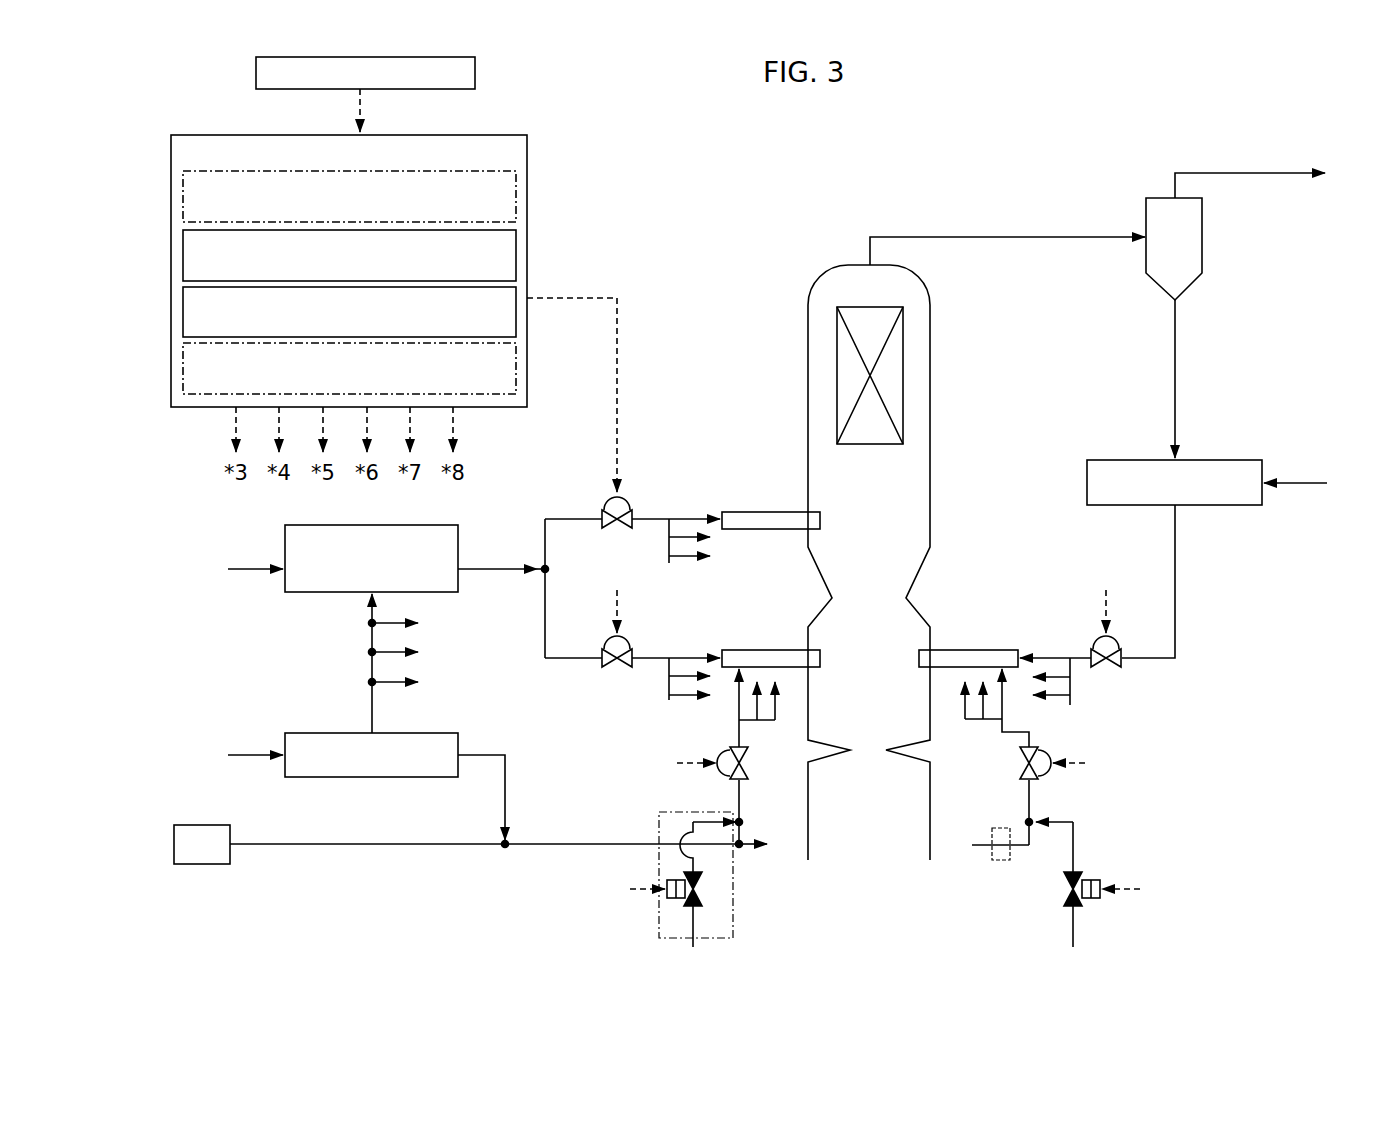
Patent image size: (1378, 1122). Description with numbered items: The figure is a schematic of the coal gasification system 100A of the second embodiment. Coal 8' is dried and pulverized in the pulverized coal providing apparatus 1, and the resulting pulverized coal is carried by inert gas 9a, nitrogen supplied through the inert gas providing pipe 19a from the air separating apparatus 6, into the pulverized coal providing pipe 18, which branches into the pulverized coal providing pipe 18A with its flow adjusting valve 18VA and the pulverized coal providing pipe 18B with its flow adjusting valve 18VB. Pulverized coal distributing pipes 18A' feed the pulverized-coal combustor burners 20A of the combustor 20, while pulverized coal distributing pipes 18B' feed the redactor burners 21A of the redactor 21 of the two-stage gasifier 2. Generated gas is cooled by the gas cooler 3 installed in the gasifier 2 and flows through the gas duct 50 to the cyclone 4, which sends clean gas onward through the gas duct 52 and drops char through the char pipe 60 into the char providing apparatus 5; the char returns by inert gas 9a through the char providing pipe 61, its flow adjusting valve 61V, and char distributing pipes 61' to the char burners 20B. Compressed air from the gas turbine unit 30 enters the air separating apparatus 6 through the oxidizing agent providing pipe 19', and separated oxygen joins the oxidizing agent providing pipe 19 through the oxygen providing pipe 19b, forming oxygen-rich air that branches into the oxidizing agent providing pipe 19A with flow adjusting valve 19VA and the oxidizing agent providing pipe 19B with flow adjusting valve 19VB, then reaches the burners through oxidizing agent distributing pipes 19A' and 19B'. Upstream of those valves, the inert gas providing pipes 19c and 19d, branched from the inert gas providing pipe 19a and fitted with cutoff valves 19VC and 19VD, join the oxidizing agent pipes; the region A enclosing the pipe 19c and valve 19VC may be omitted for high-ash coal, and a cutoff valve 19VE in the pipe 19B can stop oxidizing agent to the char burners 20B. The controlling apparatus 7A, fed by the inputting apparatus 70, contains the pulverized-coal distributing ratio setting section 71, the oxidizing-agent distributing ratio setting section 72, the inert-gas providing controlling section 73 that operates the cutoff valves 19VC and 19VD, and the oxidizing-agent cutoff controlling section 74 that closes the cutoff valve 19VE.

The inputting apparatus 70 is at (254, 73).
The controlling apparatus 7A is at (530, 230).
The pulverized-coal distributing ratio setting section 71 is at (183, 199).
The oxidizing-agent distributing ratio setting section 72 is at (183, 259).
The inert-gas providing controlling section 73 is at (183, 313).
The oxidizing-agent cutoff controlling section 74 is at (183, 370).
The coal gasification system 100A is at (682, 194).
The pulverized coal providing apparatus 1 is at (315, 595).
The coal 8' is at (255, 543).
The pulverized coal providing pipe 18 is at (500, 564).
The pulverized coal providing pipe 18A is at (607, 702).
The pulverized coal providing pipe 18B is at (614, 475).
The flow adjusting valve 18VA is at (608, 636).
The flow adjusting valve 18VB is at (623, 498).
The pulverized coal distributing pipe 18A' is at (657, 682).
The pulverized coal distributing pipe 18B' is at (699, 515).
The redactor burner 21A is at (769, 510).
The combustor burner 20A is at (769, 648).
The combustor burner 20B is at (971, 648).
The redactor 21 is at (882, 508).
The combustor 20 is at (882, 670).
The gasifier 2 is at (932, 455).
The gas cooler 3 is at (905, 375).
The cyclone 4 is at (1205, 238).
The gas duct 50 is at (1017, 234).
The gas duct 52 is at (1251, 170).
The char pipe 60 is at (1178, 390).
The char providing apparatus 5 is at (1118, 458).
The inert gas 9a is at (1299, 479).
The char providing pipe 61 is at (1171, 581).
The flow adjusting valve 61V is at (1099, 638).
The char distributing pipe 61' is at (1082, 684).
The oxidizing agent distributing pipe 19A' is at (776, 722).
The oxidizing-agent distributing pipe 19B' is at (975, 722).
The flow adjusting valve 19VA is at (724, 752).
The flow adjusting valve 19VB is at (1052, 755).
The oxidizing agent providing pipe 19A is at (684, 812).
The oxidizing agent providing pipe 19B is at (1042, 819).
The oxidizing agent providing pipe 19 is at (514, 824).
The gas turbine unit 30 is at (202, 821).
The region A is at (735, 889).
The inert gas providing pipe 19c is at (700, 922).
The inert gas providing pipe 19d is at (1078, 925).
The cutoff valve 19VC is at (670, 900).
The cutoff valve 19VD is at (1094, 880).
The cutoff valve 19VE is at (1003, 861).
The air separating apparatus 6 is at (318, 732).
The oxidizing agent providing pipe 19' is at (264, 730).
The inert gas providing pipe 19a is at (378, 712).
The oxygen providing pipe 19b is at (508, 792).